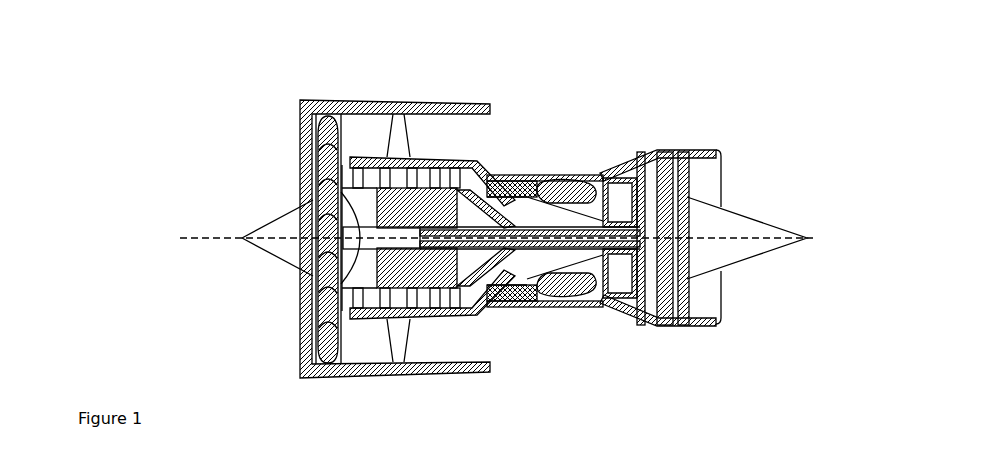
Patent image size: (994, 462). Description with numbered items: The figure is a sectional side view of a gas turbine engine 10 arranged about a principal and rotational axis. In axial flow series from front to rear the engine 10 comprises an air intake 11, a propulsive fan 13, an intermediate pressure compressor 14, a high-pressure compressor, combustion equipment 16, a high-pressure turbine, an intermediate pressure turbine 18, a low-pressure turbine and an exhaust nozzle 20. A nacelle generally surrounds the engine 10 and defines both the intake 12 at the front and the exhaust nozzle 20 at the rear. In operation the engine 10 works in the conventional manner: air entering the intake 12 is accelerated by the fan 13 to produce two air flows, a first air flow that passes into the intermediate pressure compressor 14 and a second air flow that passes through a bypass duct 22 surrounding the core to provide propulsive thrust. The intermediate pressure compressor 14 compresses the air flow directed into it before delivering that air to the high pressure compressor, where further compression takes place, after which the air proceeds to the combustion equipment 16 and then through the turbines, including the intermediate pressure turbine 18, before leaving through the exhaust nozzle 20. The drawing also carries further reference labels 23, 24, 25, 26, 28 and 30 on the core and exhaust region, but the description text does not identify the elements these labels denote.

The gas turbine engine 10 is at (582, 58).
The air intake 11 is at (300, 137).
The intake 12 is at (300, 160).
The propulsive fan 13 is at (212, 238).
The intermediate pressure compressor 14 is at (358, 157).
The combustion equipment 16 is at (537, 172).
The intermediate pressure turbine 18 is at (575, 173).
The exhaust nozzle 20 is at (604, 170).
The bypass duct 22 is at (630, 165).
The bypass duct 23 is at (427, 238).
The turbine stages 24 is at (692, 150).
The exhaust nozzle 25 is at (747, 227).
The fan hub / nose cone 26 is at (336, 285).
The lower diffuser 28 is at (520, 266).
The lower combustor 30 is at (586, 273).